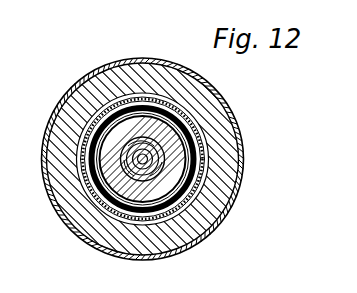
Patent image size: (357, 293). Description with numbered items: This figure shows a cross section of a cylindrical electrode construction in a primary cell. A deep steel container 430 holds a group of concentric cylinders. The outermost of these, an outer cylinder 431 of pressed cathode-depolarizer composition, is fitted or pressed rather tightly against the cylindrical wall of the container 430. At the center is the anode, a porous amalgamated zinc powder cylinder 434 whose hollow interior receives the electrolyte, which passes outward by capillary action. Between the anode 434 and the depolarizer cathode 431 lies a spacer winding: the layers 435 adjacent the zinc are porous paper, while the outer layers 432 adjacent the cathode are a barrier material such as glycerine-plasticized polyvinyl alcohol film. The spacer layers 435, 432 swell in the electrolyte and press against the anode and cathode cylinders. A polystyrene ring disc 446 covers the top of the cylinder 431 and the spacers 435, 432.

The deep steel container 430 is at (233, 111).
The outer cylinder 431 is at (218, 132).
The spacer layers 435 is at (203, 152).
The outer layers 432 is at (199, 167).
The porous amalgamated zinc powder cylinder 434 is at (178, 188).
The polystyrene ring disc 446 is at (207, 229).